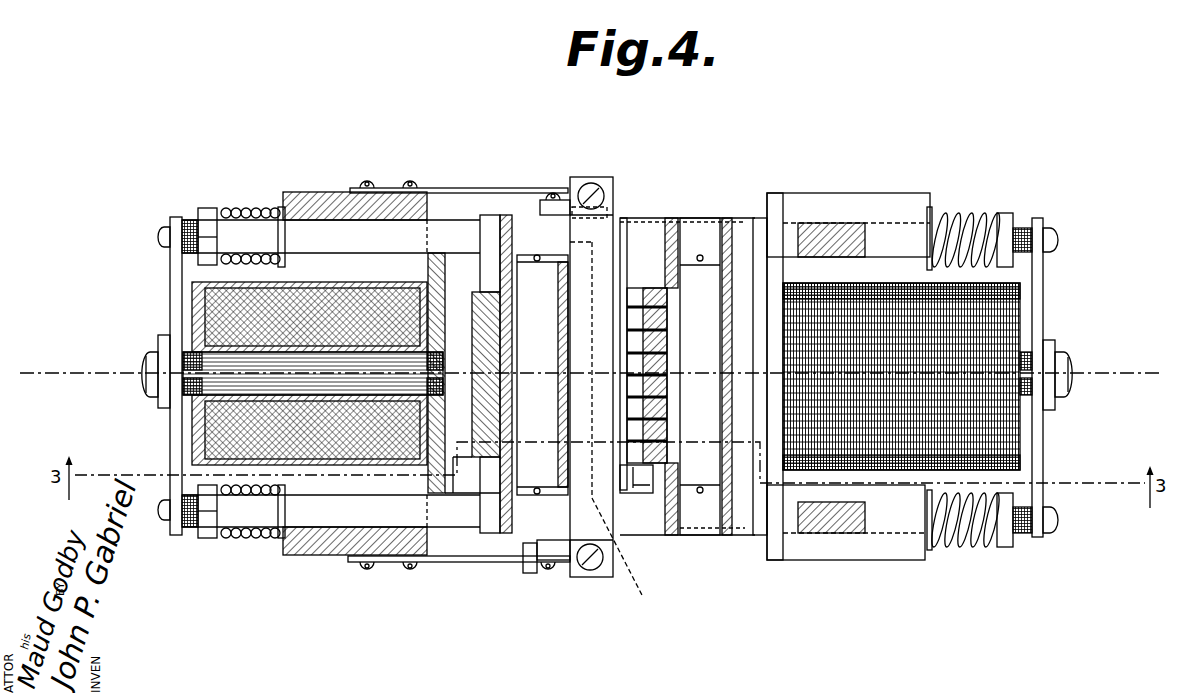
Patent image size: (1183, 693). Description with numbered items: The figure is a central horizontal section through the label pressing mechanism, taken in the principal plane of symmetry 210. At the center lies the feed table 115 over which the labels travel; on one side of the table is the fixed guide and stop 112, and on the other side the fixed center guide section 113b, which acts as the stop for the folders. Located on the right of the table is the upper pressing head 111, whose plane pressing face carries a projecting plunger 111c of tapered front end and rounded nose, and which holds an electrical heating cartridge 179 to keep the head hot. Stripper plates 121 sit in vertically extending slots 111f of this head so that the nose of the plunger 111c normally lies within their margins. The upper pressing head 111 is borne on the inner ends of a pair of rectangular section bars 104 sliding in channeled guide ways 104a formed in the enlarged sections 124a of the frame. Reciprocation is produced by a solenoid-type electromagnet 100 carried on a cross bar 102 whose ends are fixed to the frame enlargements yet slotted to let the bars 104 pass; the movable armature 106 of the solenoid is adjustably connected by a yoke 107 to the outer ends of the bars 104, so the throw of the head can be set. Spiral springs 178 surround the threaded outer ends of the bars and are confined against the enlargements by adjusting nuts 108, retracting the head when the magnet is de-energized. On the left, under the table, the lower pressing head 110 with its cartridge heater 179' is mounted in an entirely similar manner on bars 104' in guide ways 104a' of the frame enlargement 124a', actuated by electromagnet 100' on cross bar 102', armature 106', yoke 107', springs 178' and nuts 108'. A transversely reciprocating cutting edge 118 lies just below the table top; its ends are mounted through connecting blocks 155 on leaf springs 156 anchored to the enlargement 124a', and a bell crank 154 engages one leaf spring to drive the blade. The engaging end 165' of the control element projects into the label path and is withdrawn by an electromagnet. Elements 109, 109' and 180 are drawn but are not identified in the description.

The electromagnet 100 is at (947, 364).
The electromagnet 100' is at (266, 373).
The cross bar 102 is at (828, 408).
The cross bar 102' is at (367, 551).
The rectangular section bars 104 is at (1041, 411).
The bars 104' is at (331, 412).
The channeled guide ways 104a is at (961, 579).
The guide ways 104a' is at (362, 439).
The movable armature 106 is at (1089, 364).
The movable armature 106' is at (292, 469).
The yoke 107 is at (1072, 377).
The yoke 107' is at (145, 375).
The adjusting nuts 108 is at (1036, 588).
The adjusting nuts 108' is at (183, 354).
The armature nut 109 is at (1060, 352).
The armature nut 109' is at (136, 338).
The lower pressing head 110 is at (583, 273).
The upper pressing head 111 is at (671, 262).
The plunger 111c is at (640, 297).
The vertically extending slots 111f is at (706, 323).
The guide and stop 112 is at (622, 493).
The fixed center guide section 113b is at (627, 263).
The table 115 is at (615, 427).
The cutting edge 118 is at (537, 252).
The stripper plates 121 is at (702, 254).
The enlarged sections of the frame 124a is at (848, 400).
The enlarged portion of the frame 124a' is at (345, 182).
The bell crank 154 is at (528, 578).
The connecting blocks 155 is at (572, 180).
The leaf springs 156 is at (550, 190).
The engaging end of control element 165' is at (680, 536).
The spiral springs 178 is at (981, 344).
The spiral springs 178' is at (241, 347).
The electrical heating cartridge 179 is at (744, 344).
The electric cartridge heater 179' is at (471, 337).
The pole piece 180 is at (455, 297).
The plane of symmetry 210 is at (42, 372).